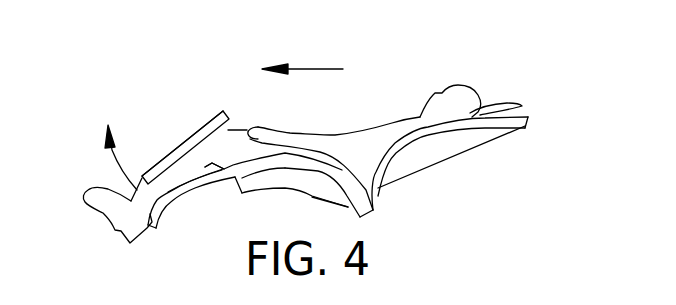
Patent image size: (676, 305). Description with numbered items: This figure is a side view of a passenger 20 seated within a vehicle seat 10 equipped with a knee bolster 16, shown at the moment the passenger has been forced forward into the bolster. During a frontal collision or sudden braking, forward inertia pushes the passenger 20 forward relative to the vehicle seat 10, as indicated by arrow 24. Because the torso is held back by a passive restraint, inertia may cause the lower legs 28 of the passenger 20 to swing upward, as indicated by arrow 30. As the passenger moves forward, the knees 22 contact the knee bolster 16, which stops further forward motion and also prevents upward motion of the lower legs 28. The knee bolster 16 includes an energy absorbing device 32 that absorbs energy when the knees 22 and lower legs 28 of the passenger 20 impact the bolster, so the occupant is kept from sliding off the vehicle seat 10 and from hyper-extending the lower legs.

The vehicle seat 10 is at (432, 145).
The knee bolster 16 is at (207, 125).
The passenger 20 is at (416, 118).
The knees 22 is at (212, 148).
The arrow 24 is at (308, 68).
The lower legs 28 is at (183, 178).
The arrow 30 is at (123, 170).
The energy absorbing device 32 is at (187, 141).